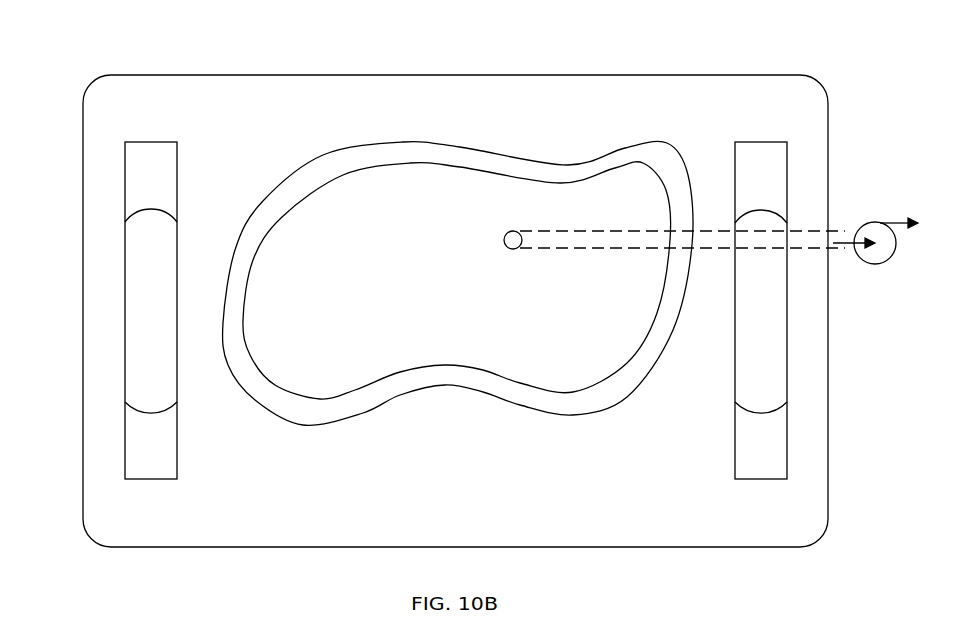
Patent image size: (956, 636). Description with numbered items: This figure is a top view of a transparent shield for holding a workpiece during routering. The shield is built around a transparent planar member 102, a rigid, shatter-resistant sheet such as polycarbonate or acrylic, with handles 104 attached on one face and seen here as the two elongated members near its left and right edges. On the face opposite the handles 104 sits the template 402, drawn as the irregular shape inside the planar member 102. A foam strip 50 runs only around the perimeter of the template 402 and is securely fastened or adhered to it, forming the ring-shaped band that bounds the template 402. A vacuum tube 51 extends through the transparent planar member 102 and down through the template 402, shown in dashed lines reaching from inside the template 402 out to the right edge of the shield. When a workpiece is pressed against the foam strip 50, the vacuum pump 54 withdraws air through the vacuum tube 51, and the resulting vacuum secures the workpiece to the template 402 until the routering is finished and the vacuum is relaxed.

The transparent planar member 102 is at (455, 285).
The handles 104 is at (103, 310).
The foam strip 50 is at (458, 224).
The template 402 is at (531, 211).
The vacuum tube 51 is at (714, 212).
The vacuum pump 54 is at (875, 274).